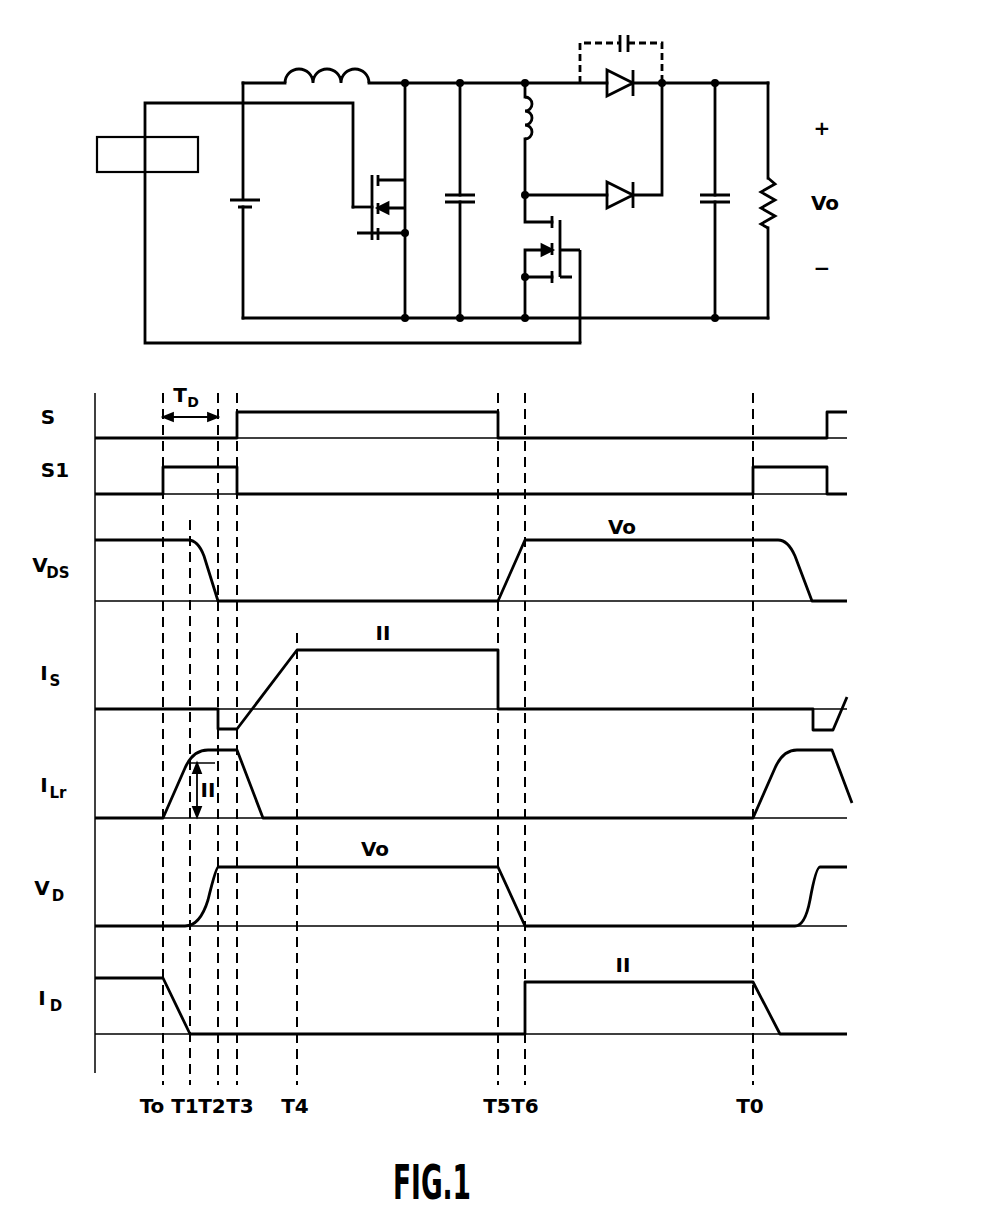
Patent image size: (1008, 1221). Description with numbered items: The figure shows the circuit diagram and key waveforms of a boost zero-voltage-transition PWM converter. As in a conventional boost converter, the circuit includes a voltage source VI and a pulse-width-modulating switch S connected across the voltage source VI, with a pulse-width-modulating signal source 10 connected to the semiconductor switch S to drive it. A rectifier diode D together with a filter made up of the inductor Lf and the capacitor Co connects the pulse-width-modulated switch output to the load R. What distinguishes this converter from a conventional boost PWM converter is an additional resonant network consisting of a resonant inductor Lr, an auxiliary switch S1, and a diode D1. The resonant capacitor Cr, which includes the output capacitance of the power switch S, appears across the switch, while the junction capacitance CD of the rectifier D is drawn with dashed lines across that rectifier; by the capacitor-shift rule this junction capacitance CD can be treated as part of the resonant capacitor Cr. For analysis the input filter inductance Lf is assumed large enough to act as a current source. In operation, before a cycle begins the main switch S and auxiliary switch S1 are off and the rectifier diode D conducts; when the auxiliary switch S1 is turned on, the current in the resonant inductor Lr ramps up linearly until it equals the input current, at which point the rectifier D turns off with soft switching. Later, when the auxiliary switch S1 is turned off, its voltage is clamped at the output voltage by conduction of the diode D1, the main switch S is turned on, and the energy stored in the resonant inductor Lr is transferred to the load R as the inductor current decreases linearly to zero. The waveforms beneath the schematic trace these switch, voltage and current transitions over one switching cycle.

The pulse-width-modulating signal source 10 is at (115, 172).
The pulse-width-modulating switch S is at (364, 224).
The auxiliary switch S1 is at (576, 279).
The rectifier diode D is at (647, 74).
The diode D1 is at (617, 181).
The inductor Lf is at (327, 59).
The resonant inductor Lr is at (545, 118).
The resonant capacitor Cr is at (477, 218).
The capacitor Co is at (700, 215).
The junction capacitance of the rectifier CD is at (621, 47).
The load R is at (778, 203).
The voltage source VI is at (227, 206).